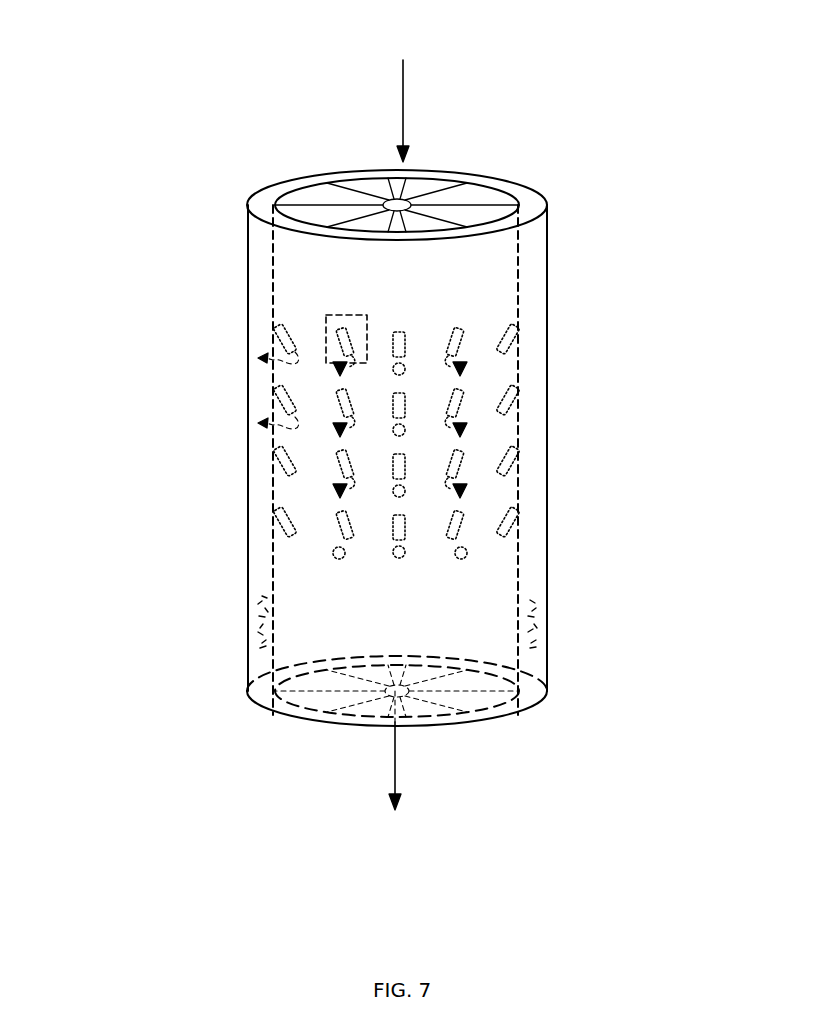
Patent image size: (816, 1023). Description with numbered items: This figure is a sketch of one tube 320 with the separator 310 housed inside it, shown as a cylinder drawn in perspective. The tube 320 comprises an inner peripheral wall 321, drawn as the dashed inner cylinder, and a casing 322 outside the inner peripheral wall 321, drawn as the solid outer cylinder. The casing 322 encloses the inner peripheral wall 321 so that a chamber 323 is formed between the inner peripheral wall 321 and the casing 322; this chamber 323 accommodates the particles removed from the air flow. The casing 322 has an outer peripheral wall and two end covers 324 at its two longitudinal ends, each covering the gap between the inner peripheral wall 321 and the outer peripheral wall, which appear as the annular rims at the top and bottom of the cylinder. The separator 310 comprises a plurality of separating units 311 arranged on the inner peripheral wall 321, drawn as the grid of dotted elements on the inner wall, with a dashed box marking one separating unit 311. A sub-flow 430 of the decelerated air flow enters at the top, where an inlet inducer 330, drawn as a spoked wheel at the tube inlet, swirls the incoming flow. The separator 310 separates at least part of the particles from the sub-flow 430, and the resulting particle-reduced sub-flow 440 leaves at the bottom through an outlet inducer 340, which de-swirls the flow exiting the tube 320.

The separator 310 is at (227, 88).
The separating unit 311 is at (340, 315).
The tube 320 is at (138, 308).
The inner peripheral wall 321 is at (273, 298).
The casing 322 is at (248, 400).
The chamber 323 is at (263, 340).
The end cover 324 is at (530, 205).
The inlet inducer 330 is at (330, 192).
The outlet inducer 340 is at (436, 700).
The sub-flow 430 is at (404, 108).
The particle-reduced sub-flow 440 is at (393, 770).